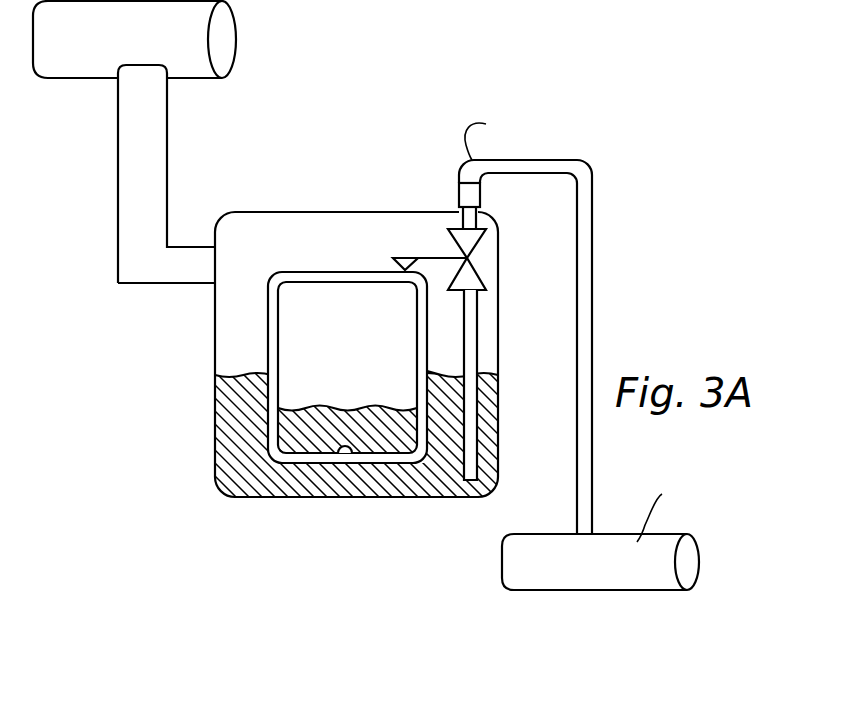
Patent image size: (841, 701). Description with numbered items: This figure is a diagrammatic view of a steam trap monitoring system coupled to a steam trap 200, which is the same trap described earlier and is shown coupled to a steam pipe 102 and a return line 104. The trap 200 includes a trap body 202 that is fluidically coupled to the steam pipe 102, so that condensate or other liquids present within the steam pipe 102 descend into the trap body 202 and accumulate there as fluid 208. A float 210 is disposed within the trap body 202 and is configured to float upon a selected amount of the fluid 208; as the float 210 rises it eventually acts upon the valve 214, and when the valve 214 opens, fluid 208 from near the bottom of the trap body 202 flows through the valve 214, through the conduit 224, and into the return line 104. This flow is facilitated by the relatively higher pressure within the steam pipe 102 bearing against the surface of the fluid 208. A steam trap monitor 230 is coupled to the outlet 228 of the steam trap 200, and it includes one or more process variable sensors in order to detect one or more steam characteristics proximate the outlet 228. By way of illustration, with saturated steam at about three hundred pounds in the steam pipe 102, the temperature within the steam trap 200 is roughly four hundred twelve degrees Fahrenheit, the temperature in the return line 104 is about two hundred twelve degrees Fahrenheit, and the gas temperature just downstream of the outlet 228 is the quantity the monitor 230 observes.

The steam pipe 102 is at (104, 78).
The return line 104 is at (502, 555).
The steam trap 200 is at (349, 347).
The trap body 202 is at (214, 365).
The fluid 208 is at (241, 498).
The float 210 is at (290, 272).
The valve 214 is at (489, 287).
The conduit 224 is at (524, 165).
The outlet 228 is at (496, 232).
The steam trap monitor 230 is at (481, 196).